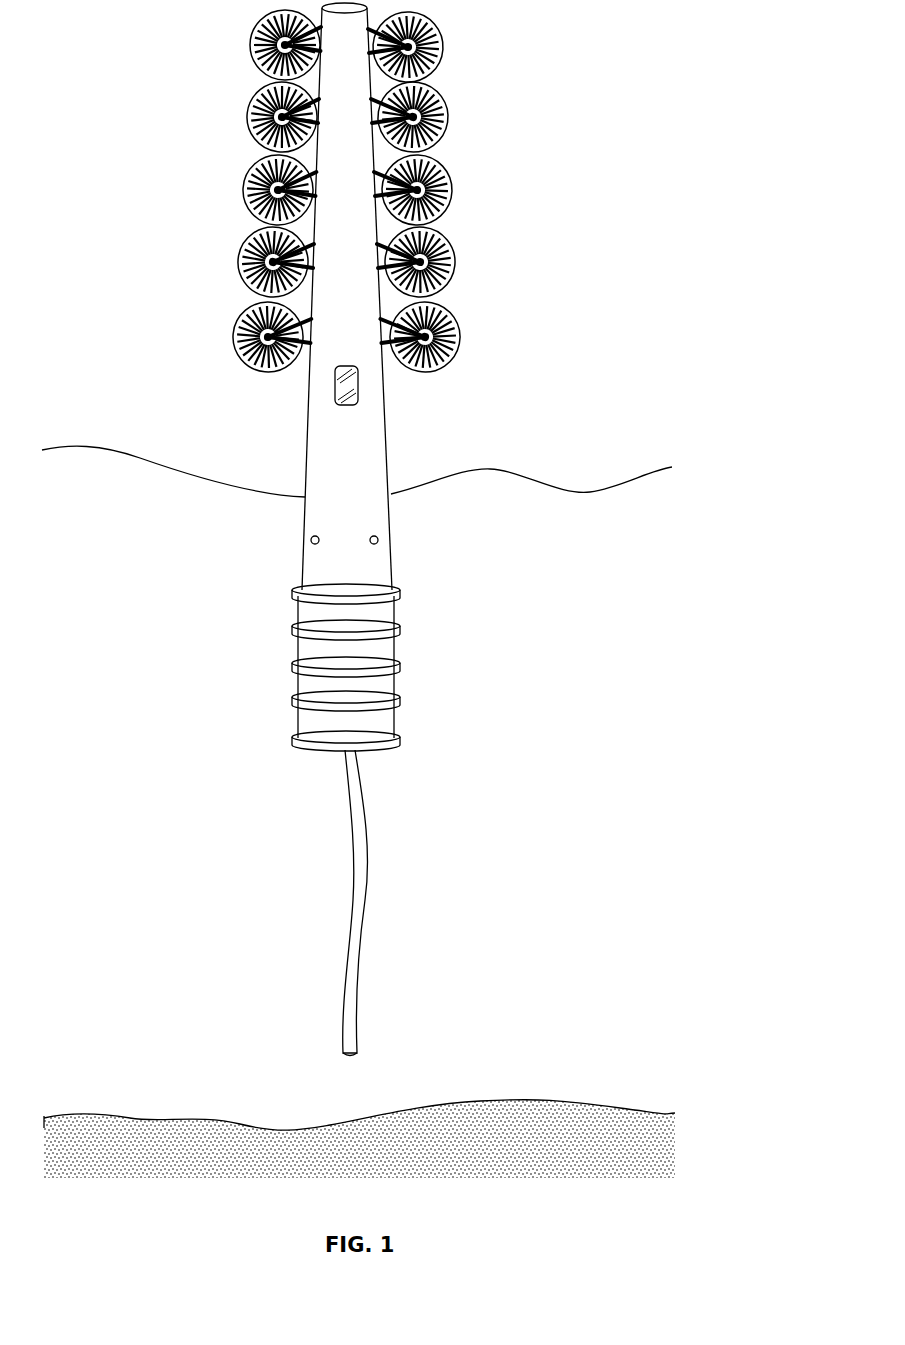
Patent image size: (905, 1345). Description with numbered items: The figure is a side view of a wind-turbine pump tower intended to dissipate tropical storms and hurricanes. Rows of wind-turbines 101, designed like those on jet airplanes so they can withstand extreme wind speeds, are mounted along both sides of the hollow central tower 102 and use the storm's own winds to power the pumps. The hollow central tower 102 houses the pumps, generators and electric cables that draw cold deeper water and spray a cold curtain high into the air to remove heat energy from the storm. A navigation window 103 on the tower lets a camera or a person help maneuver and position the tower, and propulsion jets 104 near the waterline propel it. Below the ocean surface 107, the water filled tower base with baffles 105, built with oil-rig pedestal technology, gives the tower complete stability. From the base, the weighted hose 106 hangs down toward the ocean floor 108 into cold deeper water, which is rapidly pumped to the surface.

The wind-turbines 101 is at (445, 48).
The hollow central tower 102 is at (306, 449).
The navigation window 103 is at (361, 384).
The propulsion jets 104 is at (320, 541).
The water filled tower base with baffles 105 is at (400, 630).
The weighted hose 106 is at (366, 840).
The ocean surface 107 is at (651, 470).
The ocean floor 108 is at (128, 1117).